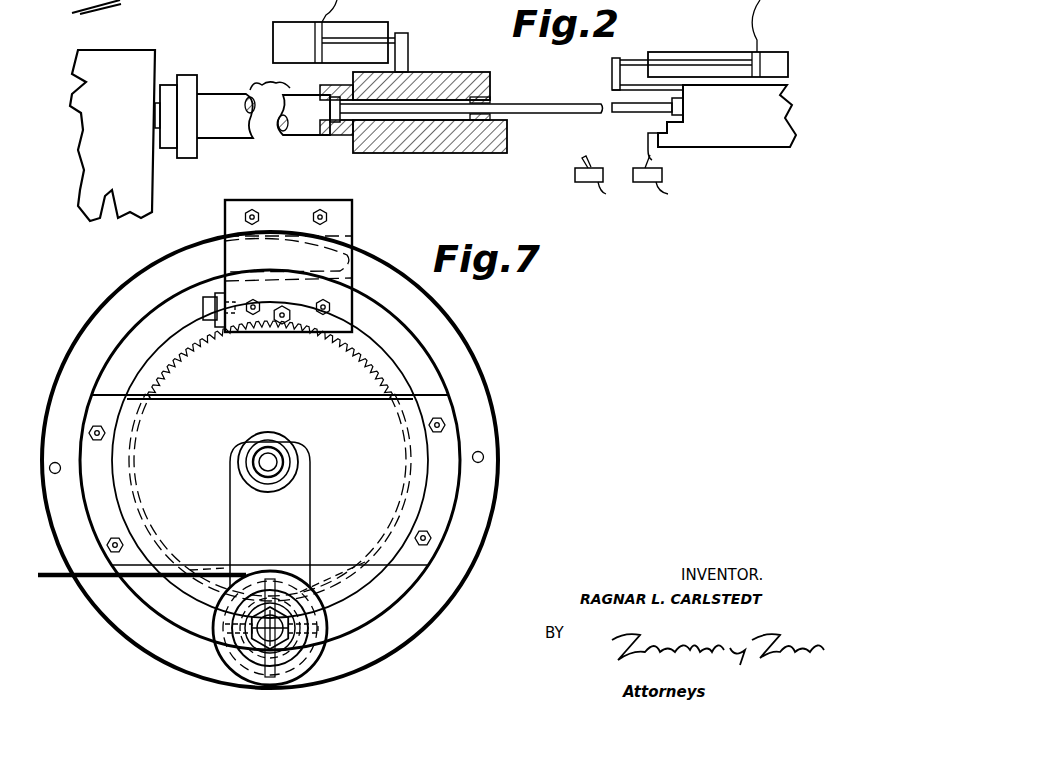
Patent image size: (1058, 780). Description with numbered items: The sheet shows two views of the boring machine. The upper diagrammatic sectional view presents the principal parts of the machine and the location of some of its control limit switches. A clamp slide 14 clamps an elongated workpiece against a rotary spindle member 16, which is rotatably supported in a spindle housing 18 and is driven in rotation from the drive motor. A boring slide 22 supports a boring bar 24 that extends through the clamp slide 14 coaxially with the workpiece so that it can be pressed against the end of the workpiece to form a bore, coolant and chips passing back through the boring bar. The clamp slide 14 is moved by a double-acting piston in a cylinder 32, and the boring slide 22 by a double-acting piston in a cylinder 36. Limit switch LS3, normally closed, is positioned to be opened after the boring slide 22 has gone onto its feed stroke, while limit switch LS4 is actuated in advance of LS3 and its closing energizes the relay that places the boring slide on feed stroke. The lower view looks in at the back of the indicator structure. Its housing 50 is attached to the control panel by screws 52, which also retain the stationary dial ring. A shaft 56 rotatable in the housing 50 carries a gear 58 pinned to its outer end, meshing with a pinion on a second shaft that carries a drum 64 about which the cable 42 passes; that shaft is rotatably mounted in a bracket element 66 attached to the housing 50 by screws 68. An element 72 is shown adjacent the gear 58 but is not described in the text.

In FIG. 2, the clamp slide 14 is at (495, 123).
In FIG. 2, the rotary spindle member 16 is at (197, 86).
In FIG. 2, the spindle housing 18 is at (124, 59).
In FIG. 2, the boring slide 22 is at (660, 123).
In FIG. 2, the boring bar 24 is at (543, 103).
In FIG. 2, the cylinder 32 is at (392, 22).
In FIG. 2, the cylinder 36 is at (714, 52).
In FIG. 7, the cable 42 is at (52, 578).
In FIG. 7, the housing 50 is at (462, 360).
In FIG. 7, the screws 52 is at (484, 457).
In FIG. 7, the shaft 56 is at (270, 461).
In FIG. 7, the gear 58 is at (363, 373).
In FIG. 7, the drum 64 is at (216, 654).
In FIG. 7, the bracket element 66 is at (418, 483).
In FIG. 7, the screws 68 is at (445, 424).
In FIG. 7, the bolt 72 is at (217, 330).
In FIG. 2, the limit switch LS3 is at (599, 191).
In FIG. 2, the limit switch LS4 is at (662, 190).